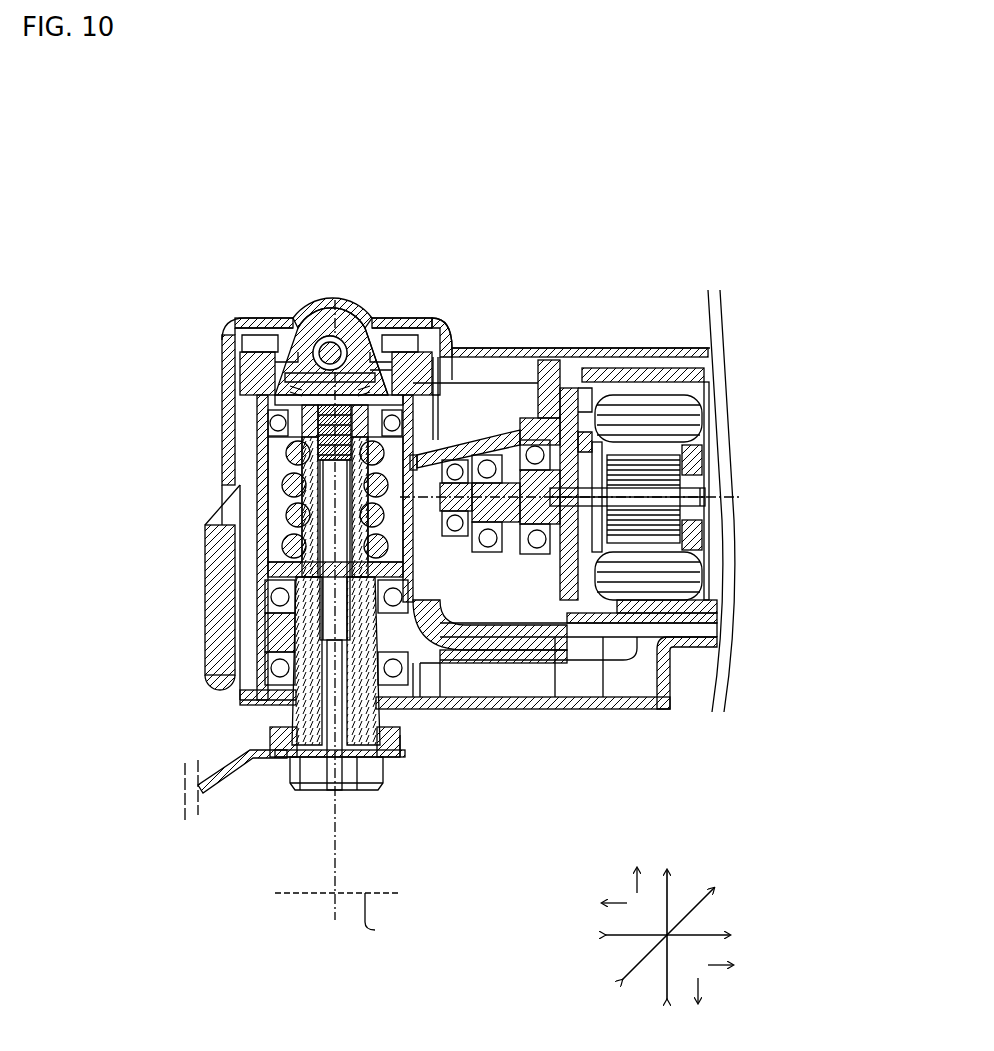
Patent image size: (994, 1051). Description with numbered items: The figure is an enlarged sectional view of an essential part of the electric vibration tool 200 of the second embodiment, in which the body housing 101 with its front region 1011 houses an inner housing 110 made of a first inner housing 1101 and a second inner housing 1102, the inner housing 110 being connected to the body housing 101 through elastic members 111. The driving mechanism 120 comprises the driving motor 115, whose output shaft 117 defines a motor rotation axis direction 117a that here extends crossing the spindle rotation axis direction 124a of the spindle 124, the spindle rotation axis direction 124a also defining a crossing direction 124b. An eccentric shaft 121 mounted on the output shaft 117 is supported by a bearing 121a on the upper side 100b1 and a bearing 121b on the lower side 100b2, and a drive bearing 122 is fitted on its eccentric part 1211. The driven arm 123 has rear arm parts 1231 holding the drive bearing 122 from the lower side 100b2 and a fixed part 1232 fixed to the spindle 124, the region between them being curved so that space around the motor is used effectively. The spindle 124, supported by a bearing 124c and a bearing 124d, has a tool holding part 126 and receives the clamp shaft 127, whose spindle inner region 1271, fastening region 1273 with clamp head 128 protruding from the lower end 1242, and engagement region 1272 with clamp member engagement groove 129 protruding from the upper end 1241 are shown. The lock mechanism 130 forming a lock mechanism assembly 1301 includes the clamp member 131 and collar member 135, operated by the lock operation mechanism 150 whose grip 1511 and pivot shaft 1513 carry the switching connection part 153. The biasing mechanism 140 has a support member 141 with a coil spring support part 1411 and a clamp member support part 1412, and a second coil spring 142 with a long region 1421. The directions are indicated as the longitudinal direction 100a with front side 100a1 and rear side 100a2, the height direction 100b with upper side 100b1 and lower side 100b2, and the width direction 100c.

The electric vibration tool 200 is at (183, 255).
The body housing 101 is at (224, 322).
The front region 1011 is at (553, 212).
The inner housing 110 is at (466, 348).
The second inner housing 1102 is at (247, 323).
The collar member 135 is at (256, 345).
The lock operation mechanism 150 is at (329, 290).
The engagement region 1272 is at (334, 330).
The switching connection part 153 is at (303, 335).
The pivot shaft 1513 is at (368, 333).
The clamp member 131 is at (282, 378).
The clamp member engagement groove 129 is at (258, 420).
The lock mechanism 130 is at (256, 440).
The lock mechanism assembly 1301 is at (256, 455).
The clamp shaft 127 is at (256, 465).
The clamp member support part 1412 is at (378, 335).
The long region 1421 is at (422, 330).
The second coil spring 142 is at (258, 500).
The biasing mechanism 140 is at (262, 510).
The support member 141 is at (262, 525).
The coil spring support part 1411 is at (262, 543).
The upper end 1241 is at (262, 573).
The bearing 124c is at (240, 590).
The first inner housing 1101 is at (238, 612).
The grip 1511 is at (240, 630).
The fixed part 1232 is at (222, 640).
The bearing 124d is at (240, 692).
The spindle 124 is at (272, 722).
The spindle inner region 1271 is at (388, 775).
The spindle rotation axis direction 124a is at (330, 803).
The lower end 1242 is at (360, 792).
The fastening region 1273 is at (300, 775).
The crossing direction 124b is at (380, 932).
The clamp head 128 is at (290, 768).
The eccentric part 1211 is at (545, 380).
The eccentric shaft 121 is at (596, 420).
The bearing 121b is at (492, 458).
The driving mechanism 120 is at (560, 700).
The arm parts 1231 is at (520, 700).
The output shaft 117 is at (705, 485).
The motor rotation axis direction 117a is at (700, 505).
The driving motor 115 is at (625, 470).
The bearing 121a is at (700, 565).
The drive bearing 122 is at (490, 700).
The elastic members 111 is at (460, 705).
The driven arm 123 is at (430, 705).
The tool holding part 126 is at (413, 743).
The longitudinal direction 100a is at (622, 936).
The height direction 100b is at (672, 888).
The width direction 100c is at (645, 965).
The upper side 100b1 is at (630, 882).
The front side 100a1 is at (615, 900).
The rear side 100a2 is at (728, 970).
The lower side 100b2 is at (705, 985).